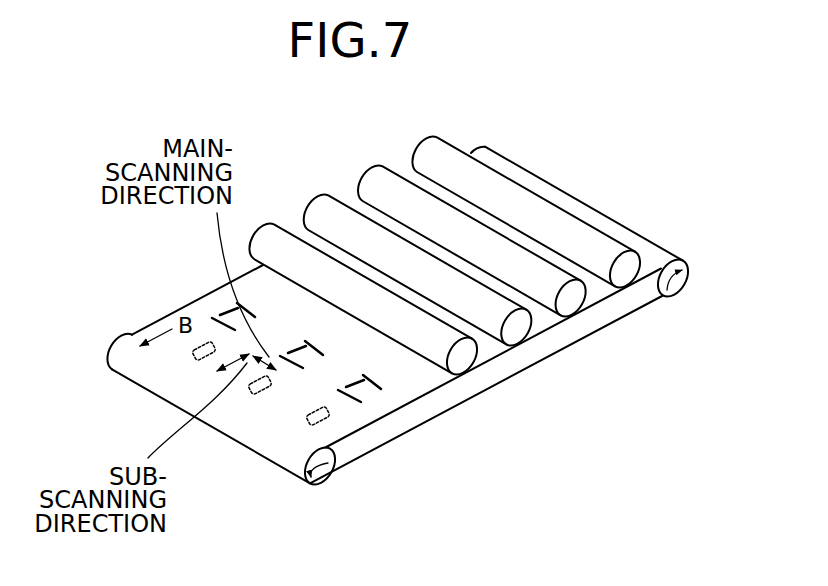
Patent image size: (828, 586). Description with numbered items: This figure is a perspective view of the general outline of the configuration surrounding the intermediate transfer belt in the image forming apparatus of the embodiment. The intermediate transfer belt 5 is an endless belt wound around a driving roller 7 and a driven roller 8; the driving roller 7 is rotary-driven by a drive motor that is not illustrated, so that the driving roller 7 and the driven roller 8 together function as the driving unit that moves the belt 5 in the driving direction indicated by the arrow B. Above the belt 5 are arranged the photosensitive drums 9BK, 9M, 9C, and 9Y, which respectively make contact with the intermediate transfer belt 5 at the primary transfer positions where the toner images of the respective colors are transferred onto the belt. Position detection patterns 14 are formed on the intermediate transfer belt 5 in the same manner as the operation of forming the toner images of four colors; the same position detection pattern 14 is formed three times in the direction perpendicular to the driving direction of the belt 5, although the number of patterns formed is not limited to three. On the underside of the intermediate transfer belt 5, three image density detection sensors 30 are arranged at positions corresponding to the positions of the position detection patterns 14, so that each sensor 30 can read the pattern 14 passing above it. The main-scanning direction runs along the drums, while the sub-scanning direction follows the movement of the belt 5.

The intermediate transfer belt 5 is at (390, 428).
The driving roller 7 is at (334, 463).
The driven roller 8 is at (673, 297).
The photosensitive drum 9Y is at (273, 224).
The photosensitive drum 9C is at (327, 195).
The photosensitive drum 9M is at (381, 166).
The photosensitive drum 9BK is at (436, 137).
The position detection pattern 14 is at (222, 303).
The image density detection sensor 30 is at (147, 425).